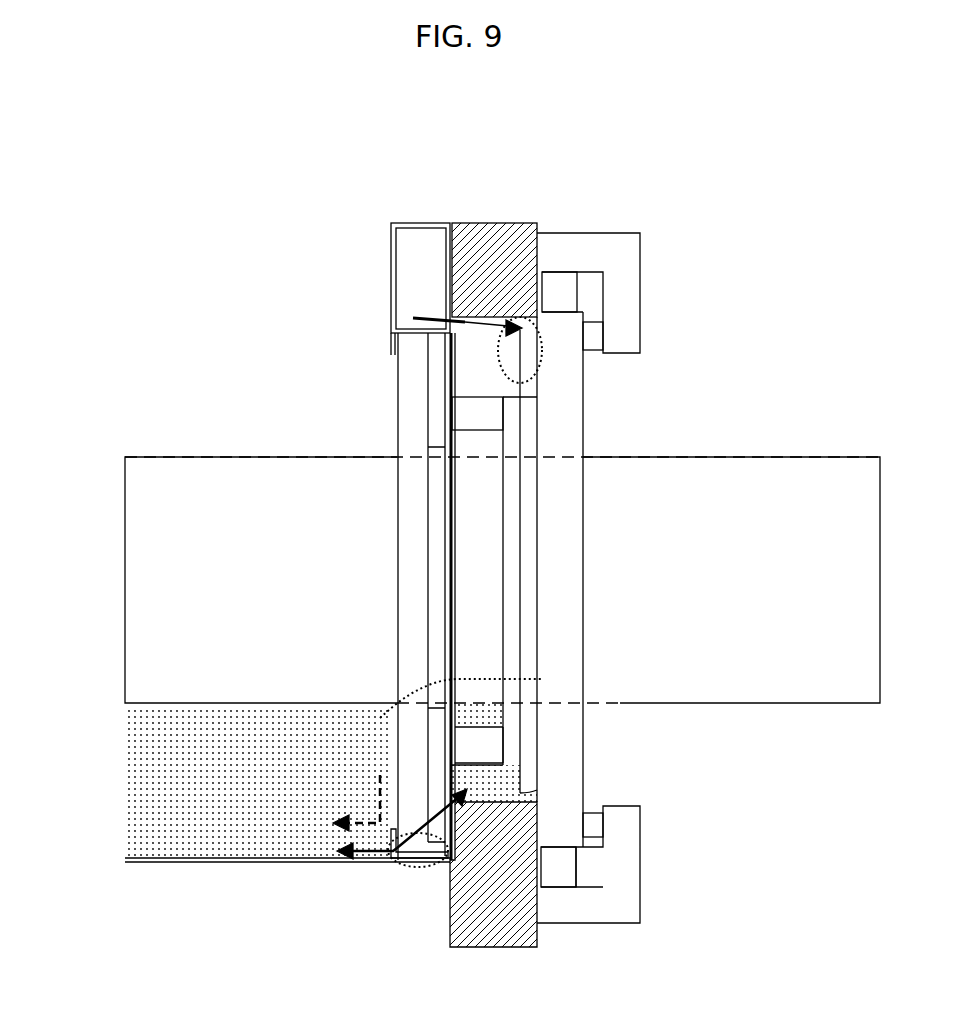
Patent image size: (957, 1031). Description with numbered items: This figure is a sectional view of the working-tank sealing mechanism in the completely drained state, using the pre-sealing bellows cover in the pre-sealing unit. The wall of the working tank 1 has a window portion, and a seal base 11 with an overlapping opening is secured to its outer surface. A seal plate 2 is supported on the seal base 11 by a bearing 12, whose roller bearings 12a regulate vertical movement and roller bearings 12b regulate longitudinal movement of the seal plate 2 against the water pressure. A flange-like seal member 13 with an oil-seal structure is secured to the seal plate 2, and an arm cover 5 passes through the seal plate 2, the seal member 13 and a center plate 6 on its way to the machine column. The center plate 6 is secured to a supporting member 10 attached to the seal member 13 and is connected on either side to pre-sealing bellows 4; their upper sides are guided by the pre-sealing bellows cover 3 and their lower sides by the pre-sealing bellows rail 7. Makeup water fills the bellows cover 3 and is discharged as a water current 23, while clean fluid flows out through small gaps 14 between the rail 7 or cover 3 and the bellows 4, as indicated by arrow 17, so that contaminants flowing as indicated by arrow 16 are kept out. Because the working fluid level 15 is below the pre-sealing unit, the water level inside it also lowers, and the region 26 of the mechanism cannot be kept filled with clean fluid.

The working tank 1 is at (183, 870).
The seal plate 2 is at (557, 523).
The pre-sealing bellows cover 3 is at (414, 220).
The pre-sealing bellows 4 is at (414, 514).
The arm cover 5 is at (190, 462).
The center plate 6 is at (434, 734).
The pre-sealing bellows rail 7 is at (389, 859).
The supporting member 10 is at (481, 413).
The seal base 11 is at (499, 254).
The bearing 12 is at (627, 250).
The roller bearings 12a is at (561, 290).
The roller bearings 12b is at (597, 330).
The seal member 13 is at (532, 736).
The small gaps 14 is at (424, 869).
The working fluid level 15 is at (117, 710).
The arrow 16 is at (333, 818).
The arrow 17 is at (340, 848).
The water current 23 is at (424, 315).
The gap 26 is at (547, 340).